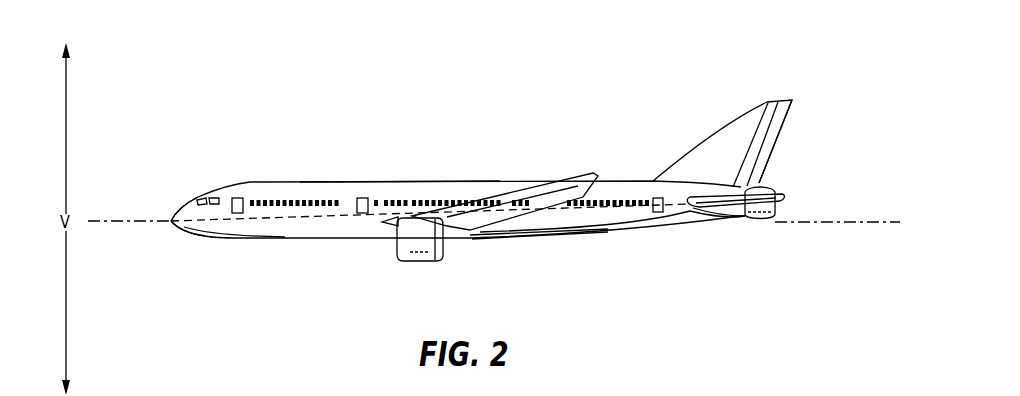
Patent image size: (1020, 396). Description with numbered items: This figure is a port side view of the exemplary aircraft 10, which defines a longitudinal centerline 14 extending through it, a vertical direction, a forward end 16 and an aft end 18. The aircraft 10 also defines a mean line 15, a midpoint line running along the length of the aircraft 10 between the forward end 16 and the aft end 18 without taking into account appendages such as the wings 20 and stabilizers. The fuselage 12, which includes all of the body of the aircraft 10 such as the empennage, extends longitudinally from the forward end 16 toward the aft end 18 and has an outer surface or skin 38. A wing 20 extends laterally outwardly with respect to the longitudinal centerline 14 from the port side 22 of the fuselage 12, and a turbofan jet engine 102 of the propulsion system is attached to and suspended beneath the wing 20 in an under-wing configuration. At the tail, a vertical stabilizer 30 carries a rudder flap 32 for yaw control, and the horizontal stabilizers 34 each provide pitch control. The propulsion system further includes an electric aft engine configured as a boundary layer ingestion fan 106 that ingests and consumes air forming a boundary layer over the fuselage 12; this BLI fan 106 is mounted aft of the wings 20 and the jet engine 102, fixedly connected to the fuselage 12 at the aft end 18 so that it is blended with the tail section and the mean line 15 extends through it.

The aircraft 10 is at (219, 130).
The fuselage 12 is at (261, 229).
The longitudinal centerline 14 is at (100, 223).
The mean line 15 is at (622, 214).
The forward end 16 is at (175, 240).
The aft end 18 is at (715, 240).
The wings 20 is at (533, 210).
The port side 22 is at (584, 236).
The vertical stabilizer 30 is at (743, 132).
The rudder flap 32 is at (777, 128).
The horizontal stabilizers 34 is at (748, 220).
The outer surface or skin 38 is at (401, 173).
The turbofan jet engine 102 is at (400, 268).
The boundary layer ingestion (BLI) fan 106 is at (775, 170).